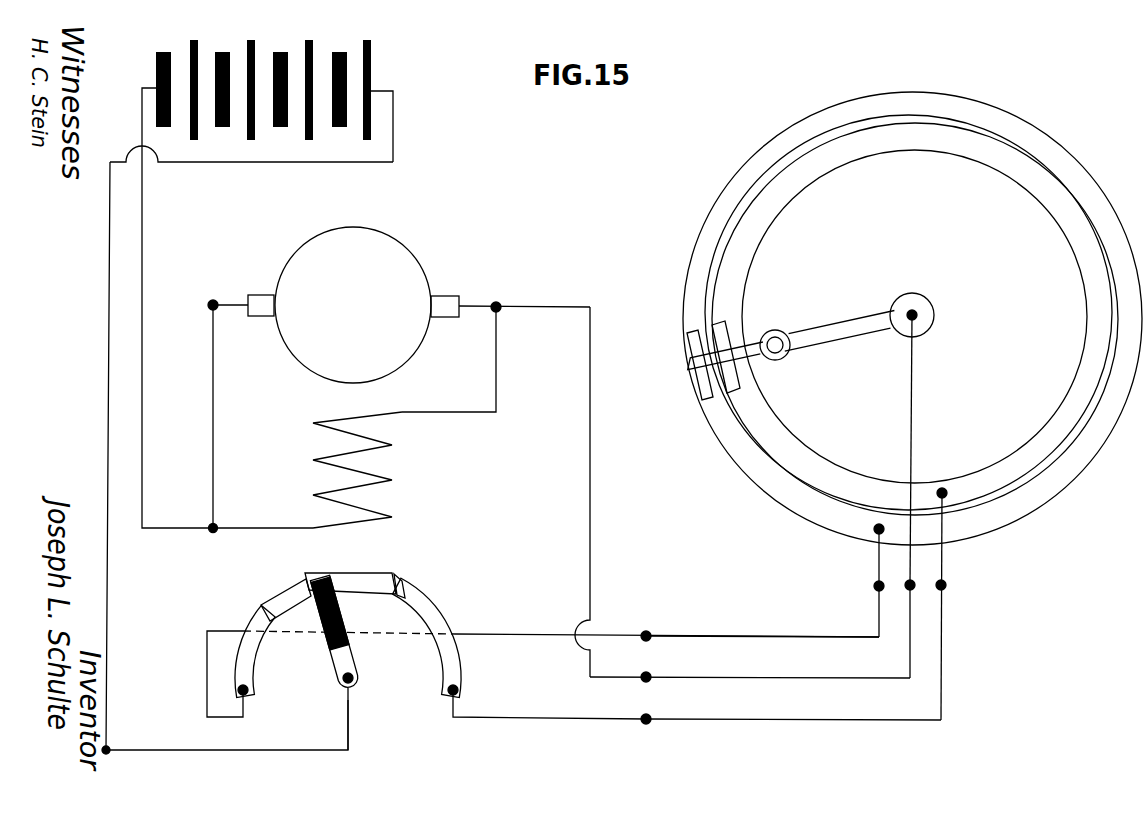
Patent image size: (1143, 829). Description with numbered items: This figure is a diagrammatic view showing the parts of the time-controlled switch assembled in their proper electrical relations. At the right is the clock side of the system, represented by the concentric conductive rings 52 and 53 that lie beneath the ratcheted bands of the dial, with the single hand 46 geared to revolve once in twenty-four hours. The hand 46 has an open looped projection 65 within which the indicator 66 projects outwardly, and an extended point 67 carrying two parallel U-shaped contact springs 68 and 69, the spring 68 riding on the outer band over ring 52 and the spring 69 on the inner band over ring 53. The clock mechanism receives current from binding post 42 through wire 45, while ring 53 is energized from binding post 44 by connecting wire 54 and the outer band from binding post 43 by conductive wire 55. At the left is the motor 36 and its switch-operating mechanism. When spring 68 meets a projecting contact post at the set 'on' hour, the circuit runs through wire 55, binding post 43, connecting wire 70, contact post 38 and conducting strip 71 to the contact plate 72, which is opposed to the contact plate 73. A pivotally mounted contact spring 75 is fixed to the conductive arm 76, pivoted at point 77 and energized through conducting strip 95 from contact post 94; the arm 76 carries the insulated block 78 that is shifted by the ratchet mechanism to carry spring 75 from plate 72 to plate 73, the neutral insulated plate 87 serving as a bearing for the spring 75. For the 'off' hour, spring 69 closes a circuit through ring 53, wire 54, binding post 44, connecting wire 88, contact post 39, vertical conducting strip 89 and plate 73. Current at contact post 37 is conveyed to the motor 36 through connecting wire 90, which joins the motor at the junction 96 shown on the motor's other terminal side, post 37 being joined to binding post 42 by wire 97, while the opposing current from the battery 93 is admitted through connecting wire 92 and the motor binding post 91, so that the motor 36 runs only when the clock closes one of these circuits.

The motor 36 is at (417, 268).
The contact post 37 is at (653, 666).
The contact post 38 is at (653, 624).
The contact post 39 is at (653, 708).
The binding post 42 is at (910, 587).
The binding post 43 is at (879, 587).
The binding post 44 is at (944, 587).
The wire 45 is at (913, 413).
The hand 46 is at (833, 327).
The conductive ring 52 is at (1058, 481).
The conductive ring 53 is at (1011, 460).
The connecting wire 54 is at (943, 573).
The conductive wire 55 is at (879, 559).
The open looped projection 65 is at (773, 329).
The indicator 66 is at (782, 353).
The extended point 67 is at (690, 363).
The contact spring 68 is at (687, 336).
The contact spring 69 is at (733, 383).
The connecting wire 70 is at (762, 636).
The conducting strip 71 is at (245, 703).
The contact plate 72 is at (252, 668).
The contact plate 73 is at (450, 665).
The contact spring 75 is at (277, 610).
The conductive arm 76 is at (352, 648).
The pivot point 77 is at (354, 676).
The insulated block 78 is at (323, 618).
The neutral insulated plate 87 is at (400, 585).
The connecting wire 88 is at (762, 714).
The vertical conducting strip 89 is at (456, 707).
The connecting wire 90 is at (572, 290).
The binding post 91 is at (215, 302).
The connecting wire 92 is at (142, 337).
The battery 93 is at (262, 121).
The contact post 94 is at (108, 748).
The conducting strip 95 is at (350, 722).
The terminal 96 is at (498, 304).
The wire 97 is at (755, 671).